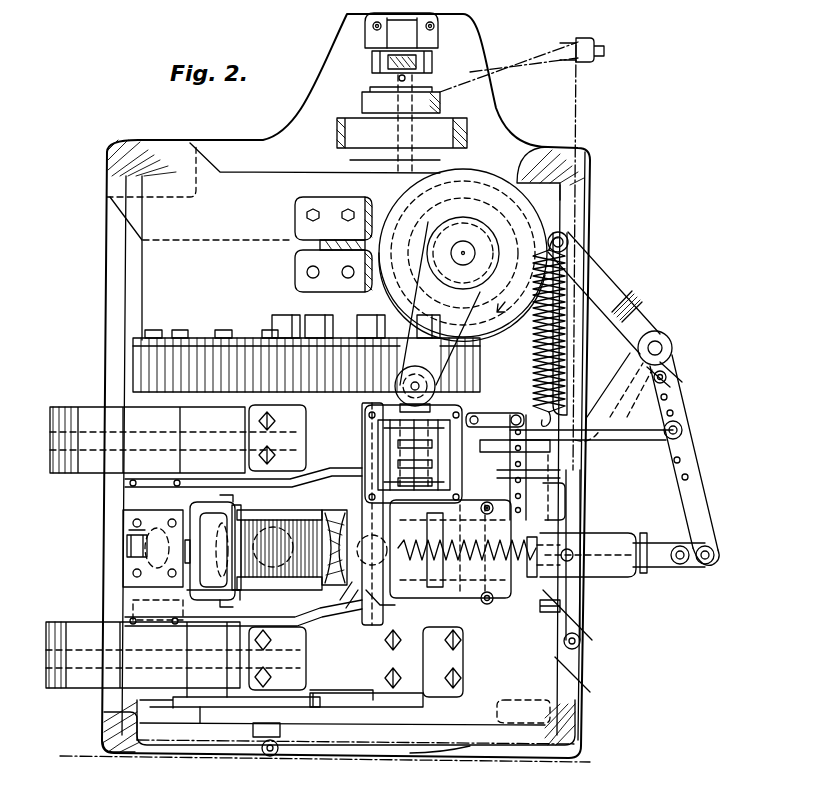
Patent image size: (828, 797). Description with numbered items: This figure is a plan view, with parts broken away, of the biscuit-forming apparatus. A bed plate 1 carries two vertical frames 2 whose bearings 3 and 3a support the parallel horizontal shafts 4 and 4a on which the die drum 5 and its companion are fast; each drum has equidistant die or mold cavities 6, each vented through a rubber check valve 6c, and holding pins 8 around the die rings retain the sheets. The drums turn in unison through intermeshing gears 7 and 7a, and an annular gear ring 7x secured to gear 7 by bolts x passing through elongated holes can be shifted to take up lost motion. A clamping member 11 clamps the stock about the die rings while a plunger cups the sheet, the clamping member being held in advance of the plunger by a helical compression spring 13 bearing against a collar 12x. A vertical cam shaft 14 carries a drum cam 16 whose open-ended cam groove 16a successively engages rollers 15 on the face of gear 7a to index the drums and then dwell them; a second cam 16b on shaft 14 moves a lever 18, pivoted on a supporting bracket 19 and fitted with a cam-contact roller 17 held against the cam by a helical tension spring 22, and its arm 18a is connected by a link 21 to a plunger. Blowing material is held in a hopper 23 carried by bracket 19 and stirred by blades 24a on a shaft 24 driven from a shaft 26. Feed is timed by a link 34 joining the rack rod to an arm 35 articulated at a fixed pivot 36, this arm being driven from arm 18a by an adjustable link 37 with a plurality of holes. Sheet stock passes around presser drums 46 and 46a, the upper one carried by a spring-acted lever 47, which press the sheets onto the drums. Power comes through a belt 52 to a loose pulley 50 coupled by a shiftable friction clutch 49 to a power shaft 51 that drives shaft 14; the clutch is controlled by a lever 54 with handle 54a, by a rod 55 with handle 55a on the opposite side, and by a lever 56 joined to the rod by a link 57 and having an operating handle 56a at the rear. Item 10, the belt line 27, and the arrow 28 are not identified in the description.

The bed plate 1 is at (150, 305).
The vertical frame 2 is at (100, 420).
The bearing 3 is at (200, 697).
The bearing 3a is at (390, 702).
The horizontal shaft 4 is at (235, 708).
The horizontal shaft 4a is at (363, 713).
The cylindrical die or mold member 5 is at (340, 603).
The die or mold cavity 6 is at (367, 600).
The check valve 6c is at (423, 630).
The intermeshing gear 7 is at (160, 360).
The annular gear ring 7x is at (208, 335).
The bolt x is at (176, 312).
The intermeshing gear 7a is at (436, 375).
The holding pin 8 is at (358, 470).
The bar 10 is at (594, 573).
The clamping member 11 is at (453, 610).
The collar 12x is at (545, 566).
The helical compression spring 13 is at (517, 590).
The vertical cam shaft 14 is at (470, 257).
The roller 15 is at (320, 320).
The drum cam 16 is at (562, 128).
The cam groove 16a is at (372, 292).
The second cam 16b is at (415, 222).
The cam-contact roller 17 is at (470, 200).
The lever 18 is at (642, 325).
The arm of lever 18a is at (693, 500).
The supporting bracket 19 is at (607, 395).
The link 21 is at (620, 557).
The helical tension spring 22 is at (496, 350).
The hopper 23 is at (377, 433).
The shaft 24 is at (433, 450).
The stirrer blade 24a is at (410, 443).
The shaft 26 is at (495, 415).
The belt 27 is at (460, 353).
The pulley housing 28 is at (500, 308).
The link 34 is at (528, 383).
The arm or lever 35 is at (513, 497).
The fixed pivot 36 is at (566, 507).
The link 37 is at (640, 440).
The presser drum 46 is at (233, 613).
The presser drum 46a is at (560, 640).
The lever 47 is at (142, 548).
The shiftable friction clutch member 49 is at (440, 92).
The loose pulley 50 is at (355, 125).
The power shaft 51 is at (397, 160).
The belt 52 is at (468, 130).
The lever 54 is at (372, 62).
The handle 54a is at (595, 52).
The rod 55 is at (580, 315).
The handle 55a is at (566, 648).
The lever 56 is at (460, 753).
The operating handle 56a is at (133, 747).
The link 57 is at (580, 682).